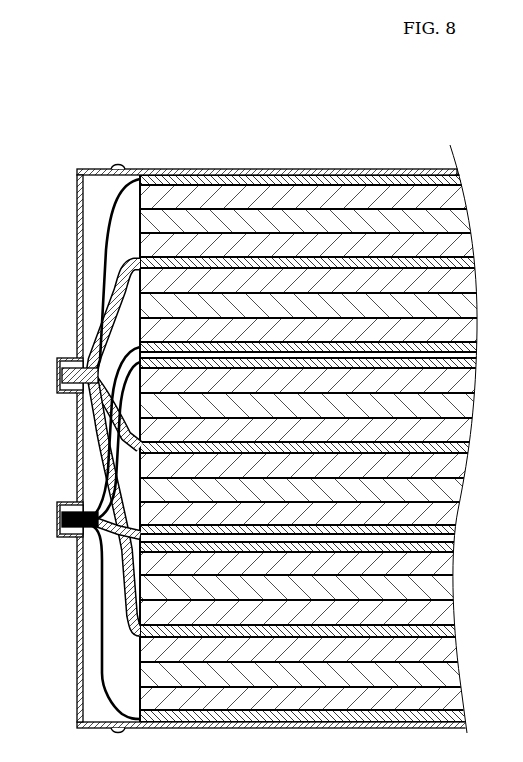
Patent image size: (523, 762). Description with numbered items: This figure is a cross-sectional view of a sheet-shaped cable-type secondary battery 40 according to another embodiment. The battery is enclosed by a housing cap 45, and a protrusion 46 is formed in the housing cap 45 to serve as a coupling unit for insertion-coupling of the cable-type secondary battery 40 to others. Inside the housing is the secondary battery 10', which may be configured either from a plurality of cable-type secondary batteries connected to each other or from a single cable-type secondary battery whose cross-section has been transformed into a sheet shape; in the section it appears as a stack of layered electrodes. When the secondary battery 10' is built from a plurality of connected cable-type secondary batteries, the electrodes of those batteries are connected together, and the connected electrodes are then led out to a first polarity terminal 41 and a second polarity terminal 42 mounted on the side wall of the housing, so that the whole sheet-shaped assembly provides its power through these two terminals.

The secondary battery 10' is at (315, 429).
The cable-type secondary battery 40 is at (298, 128).
The first polarity terminal 41 is at (57, 375).
The second polarity terminal 42 is at (57, 519).
The housing cap 45 is at (80, 169).
The protrusion 46 is at (116, 167).